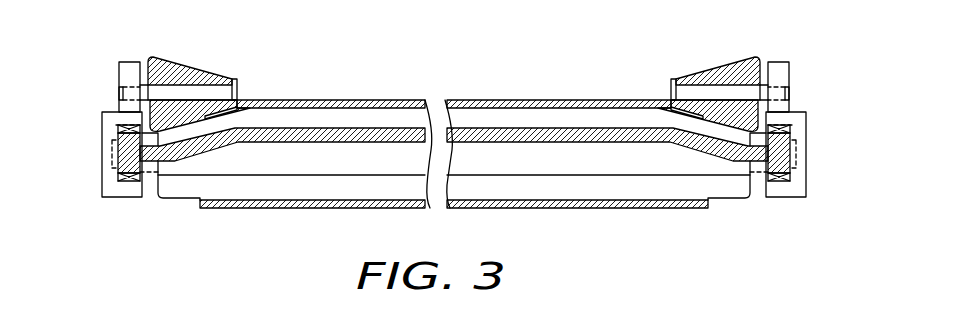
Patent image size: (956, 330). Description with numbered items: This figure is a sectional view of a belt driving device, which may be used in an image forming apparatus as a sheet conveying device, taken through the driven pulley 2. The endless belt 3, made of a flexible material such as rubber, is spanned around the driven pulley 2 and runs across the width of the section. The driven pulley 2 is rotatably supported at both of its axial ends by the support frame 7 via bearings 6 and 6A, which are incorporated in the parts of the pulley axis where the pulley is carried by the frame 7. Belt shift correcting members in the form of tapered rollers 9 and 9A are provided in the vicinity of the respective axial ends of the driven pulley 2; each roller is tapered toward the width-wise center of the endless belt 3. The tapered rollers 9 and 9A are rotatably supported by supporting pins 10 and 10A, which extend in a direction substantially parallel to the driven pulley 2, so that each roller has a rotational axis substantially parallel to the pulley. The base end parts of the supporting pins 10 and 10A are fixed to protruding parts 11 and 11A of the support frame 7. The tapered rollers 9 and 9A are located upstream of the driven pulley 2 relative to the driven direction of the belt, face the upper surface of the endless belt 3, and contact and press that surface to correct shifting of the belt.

The driven pulley 2 is at (732, 208).
The endless belt 3 is at (527, 100).
The bearing 6 is at (120, 178).
The bearing 6A is at (790, 132).
The support frame 7 is at (326, 128).
The tapered roller 9 is at (215, 76).
The tapered roller 9A is at (692, 77).
The supporting pin 10 is at (173, 90).
The supporting pin 10A is at (729, 90).
The protruding part 11 is at (118, 73).
The protruding part 11A is at (790, 74).